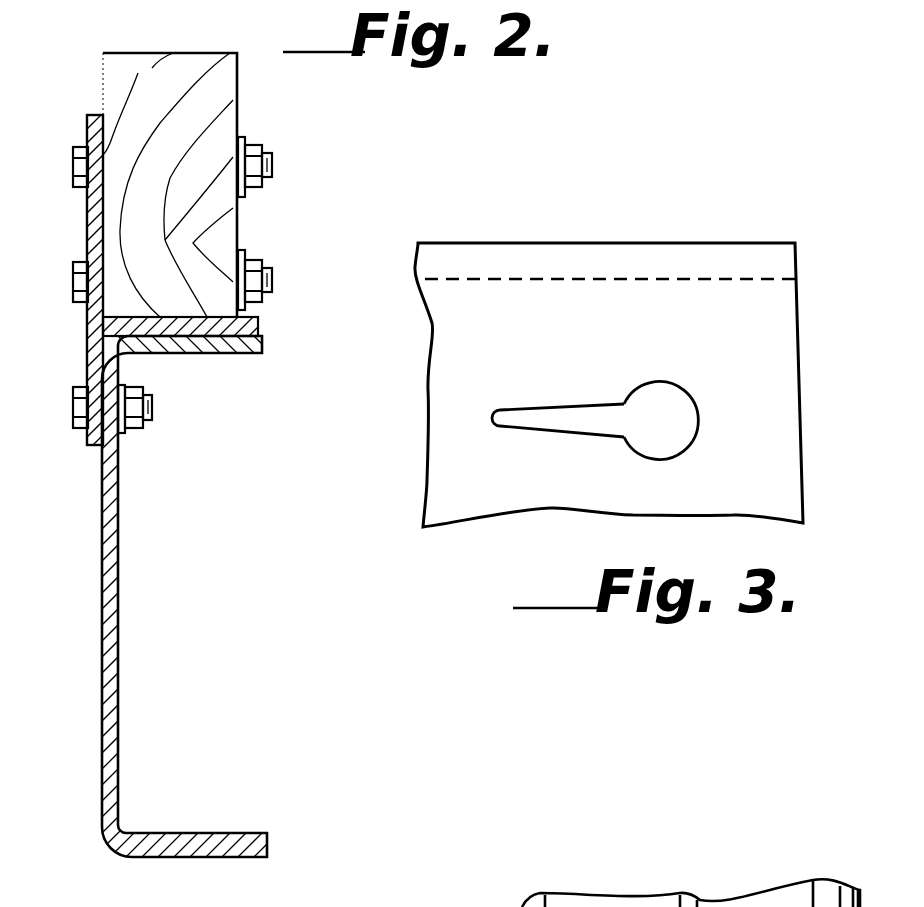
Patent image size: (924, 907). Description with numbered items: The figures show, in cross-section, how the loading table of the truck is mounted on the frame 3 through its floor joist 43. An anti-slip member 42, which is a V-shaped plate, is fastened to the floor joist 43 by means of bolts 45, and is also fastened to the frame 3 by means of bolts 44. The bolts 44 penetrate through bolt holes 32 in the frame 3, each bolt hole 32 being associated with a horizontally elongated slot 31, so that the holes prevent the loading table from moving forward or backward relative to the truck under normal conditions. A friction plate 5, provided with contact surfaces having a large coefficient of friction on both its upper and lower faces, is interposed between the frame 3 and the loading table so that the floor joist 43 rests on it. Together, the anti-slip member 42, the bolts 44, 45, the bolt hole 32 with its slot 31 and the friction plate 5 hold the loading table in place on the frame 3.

In FIG. 2, the frame 3 is at (107, 510).
In FIG. 3, the frame 3 is at (647, 243).
In FIG. 2, the friction plate 5 is at (300, 314).
In FIG. 3, the horizontally elongated slot 31 is at (582, 418).
In FIG. 3, the bolt hole 32 is at (694, 418).
In FIG. 2, the anti-slip member 42 is at (93, 223).
In FIG. 2, the floor joist 43 is at (242, 222).
In FIG. 2, the bolt 44 is at (78, 407).
In FIG. 2, the bolt 45 is at (83, 277).